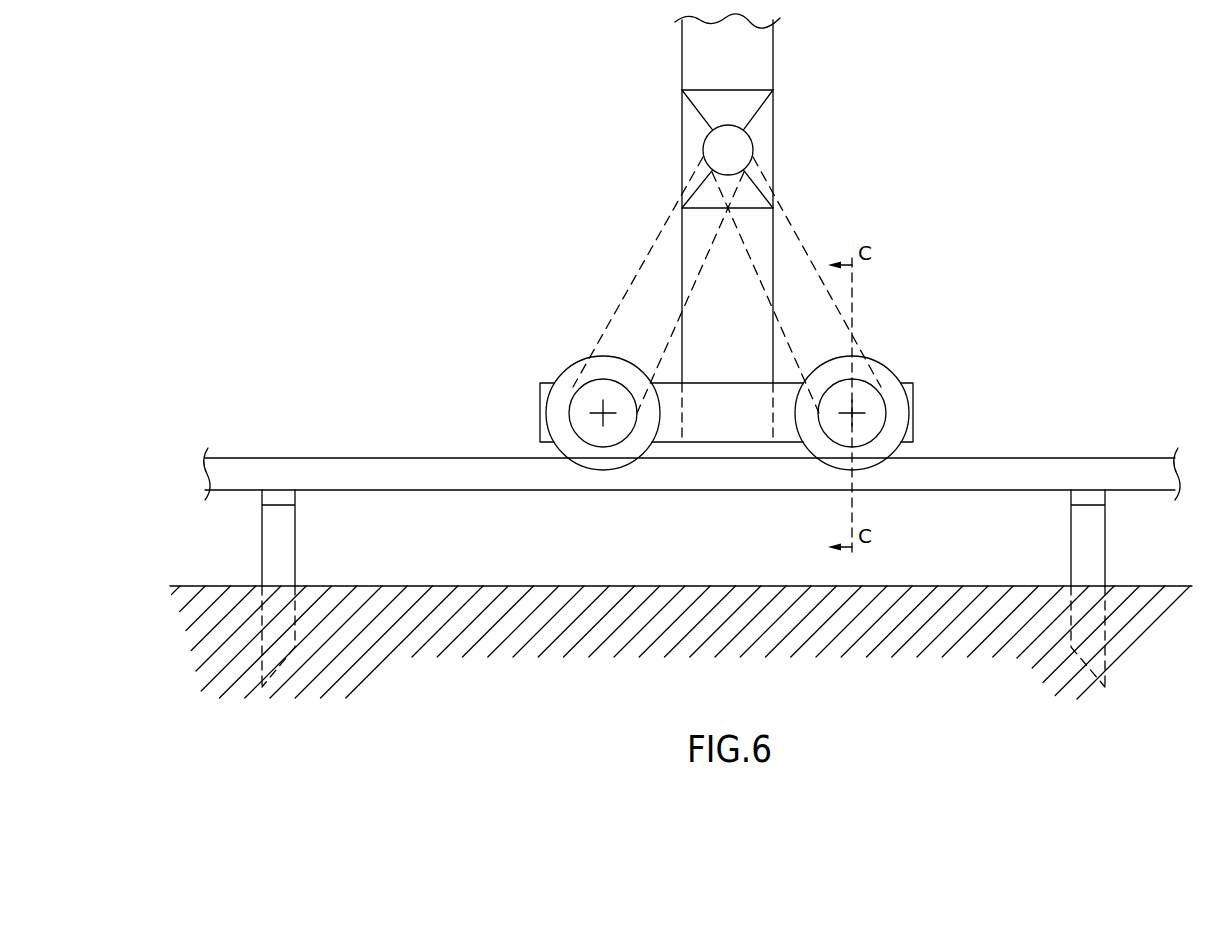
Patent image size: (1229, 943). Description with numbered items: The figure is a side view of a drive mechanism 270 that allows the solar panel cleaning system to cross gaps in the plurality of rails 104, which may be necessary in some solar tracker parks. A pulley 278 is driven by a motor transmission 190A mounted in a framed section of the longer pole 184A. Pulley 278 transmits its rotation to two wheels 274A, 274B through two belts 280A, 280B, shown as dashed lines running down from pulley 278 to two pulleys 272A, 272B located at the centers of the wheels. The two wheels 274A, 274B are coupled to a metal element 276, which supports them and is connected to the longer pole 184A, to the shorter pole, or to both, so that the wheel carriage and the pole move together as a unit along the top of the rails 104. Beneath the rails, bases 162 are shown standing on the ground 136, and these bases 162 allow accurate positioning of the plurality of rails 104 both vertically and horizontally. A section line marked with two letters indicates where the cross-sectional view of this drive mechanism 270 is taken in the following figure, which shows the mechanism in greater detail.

The drive mechanism 270 is at (418, 184).
The longer pole 184A is at (762, 54).
The motor transmission 190A is at (760, 133).
The pulley 278 is at (704, 152).
The belt 280A is at (628, 283).
The belt 280B is at (787, 208).
The metal element 276 is at (728, 423).
The wheel 274A is at (570, 385).
The wheel 274B is at (879, 378).
The pulley 272A is at (596, 436).
The pulley 272B is at (860, 440).
The plurality of rails 104 is at (1017, 468).
The bases of the plurality of rails 162 is at (1090, 537).
The ground 136 is at (497, 585).